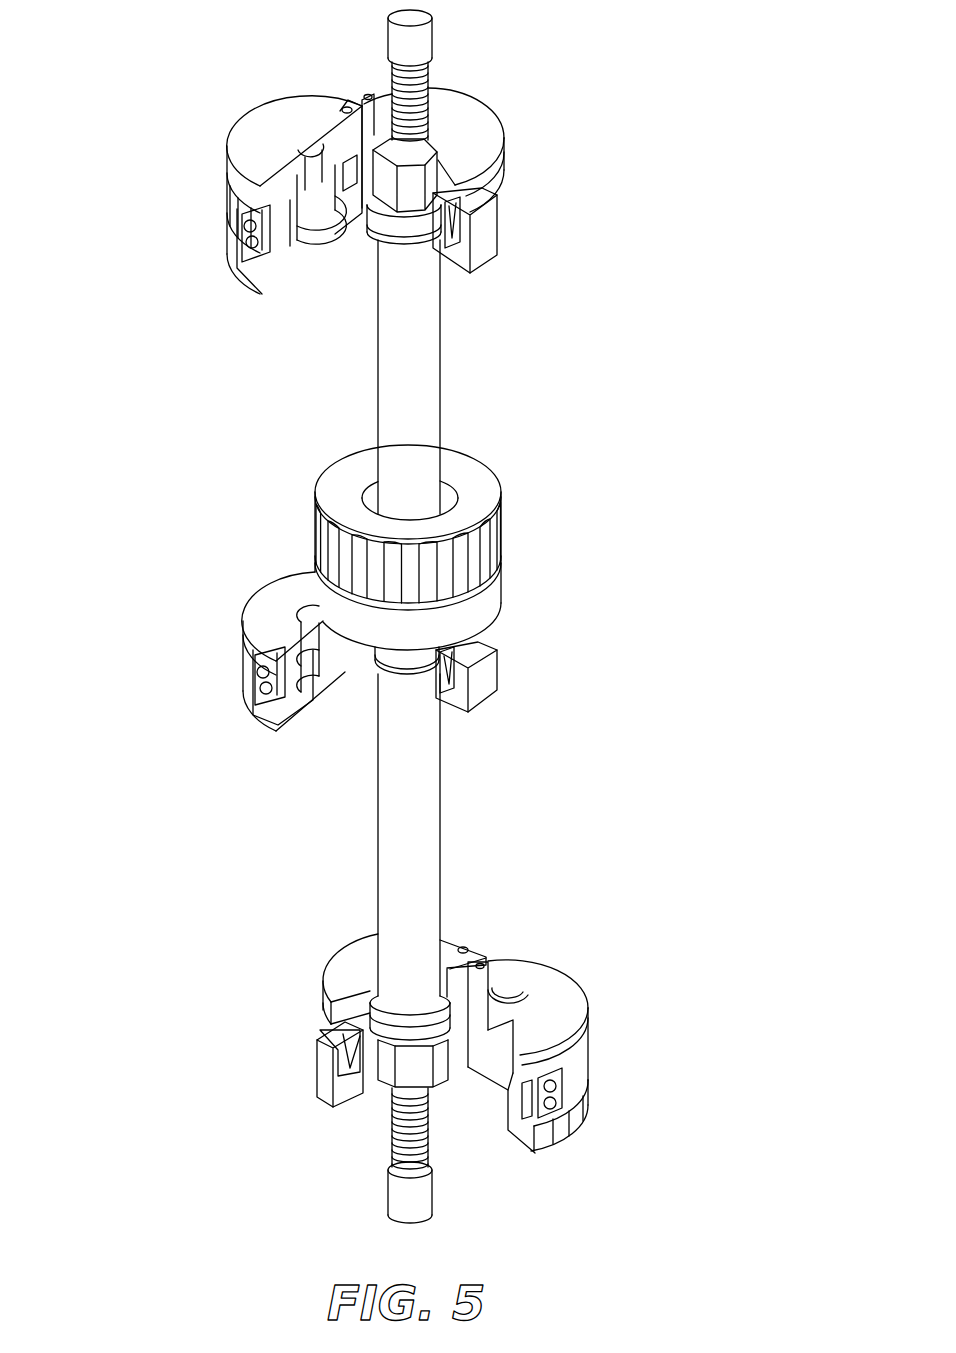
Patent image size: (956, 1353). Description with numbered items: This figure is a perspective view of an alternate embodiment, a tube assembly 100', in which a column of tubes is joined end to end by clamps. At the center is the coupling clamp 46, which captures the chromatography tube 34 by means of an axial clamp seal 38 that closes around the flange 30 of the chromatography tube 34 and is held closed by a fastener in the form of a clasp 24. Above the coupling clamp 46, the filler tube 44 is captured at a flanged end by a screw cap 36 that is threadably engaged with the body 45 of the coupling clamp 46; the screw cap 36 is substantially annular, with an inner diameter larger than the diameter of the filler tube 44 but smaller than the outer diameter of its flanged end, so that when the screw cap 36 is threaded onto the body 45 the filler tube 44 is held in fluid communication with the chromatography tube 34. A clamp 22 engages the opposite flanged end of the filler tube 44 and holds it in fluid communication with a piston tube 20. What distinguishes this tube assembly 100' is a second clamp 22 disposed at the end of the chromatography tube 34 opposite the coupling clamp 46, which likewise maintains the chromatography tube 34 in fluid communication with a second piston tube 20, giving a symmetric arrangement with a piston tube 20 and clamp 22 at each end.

The tube assembly 100' is at (282, 160).
The piston tube 20 is at (420, 72).
The clamp 22 is at (580, 1057).
The clasp 24 is at (467, 664).
The flange 30 is at (414, 664).
The chromatography tube 34 is at (432, 830).
The screw cap 36 is at (332, 488).
The axial clamp seal 38 is at (258, 612).
The filler tube 44 is at (432, 372).
The body 45 is at (497, 602).
The coupling clamp 46 is at (170, 500).